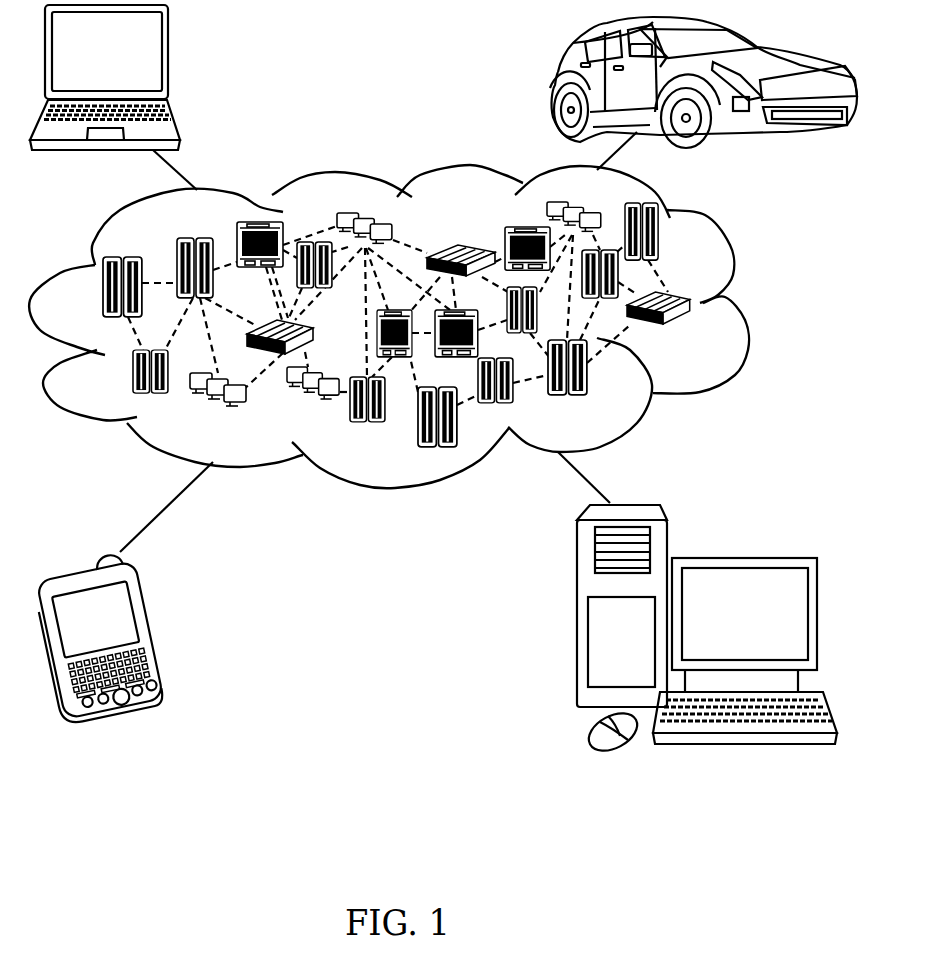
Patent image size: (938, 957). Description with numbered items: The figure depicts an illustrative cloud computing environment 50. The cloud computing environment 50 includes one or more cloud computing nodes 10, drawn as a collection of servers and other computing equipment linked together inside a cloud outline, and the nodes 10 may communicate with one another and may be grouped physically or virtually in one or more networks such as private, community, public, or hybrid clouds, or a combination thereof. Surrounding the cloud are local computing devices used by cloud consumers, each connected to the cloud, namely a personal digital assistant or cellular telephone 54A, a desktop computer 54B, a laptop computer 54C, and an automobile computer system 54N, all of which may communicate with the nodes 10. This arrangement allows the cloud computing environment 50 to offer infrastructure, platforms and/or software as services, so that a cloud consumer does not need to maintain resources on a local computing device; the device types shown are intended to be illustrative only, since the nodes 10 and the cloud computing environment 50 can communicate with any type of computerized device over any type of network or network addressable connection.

The cloud computing nodes 10 is at (704, 338).
The cloud computing environment 50 is at (748, 308).
The personal digital assistant or cellular telephone 54A is at (157, 627).
The desktop computer 54B is at (742, 558).
The laptop computer 54C is at (167, 62).
The automobile computer system 54N is at (558, 80).